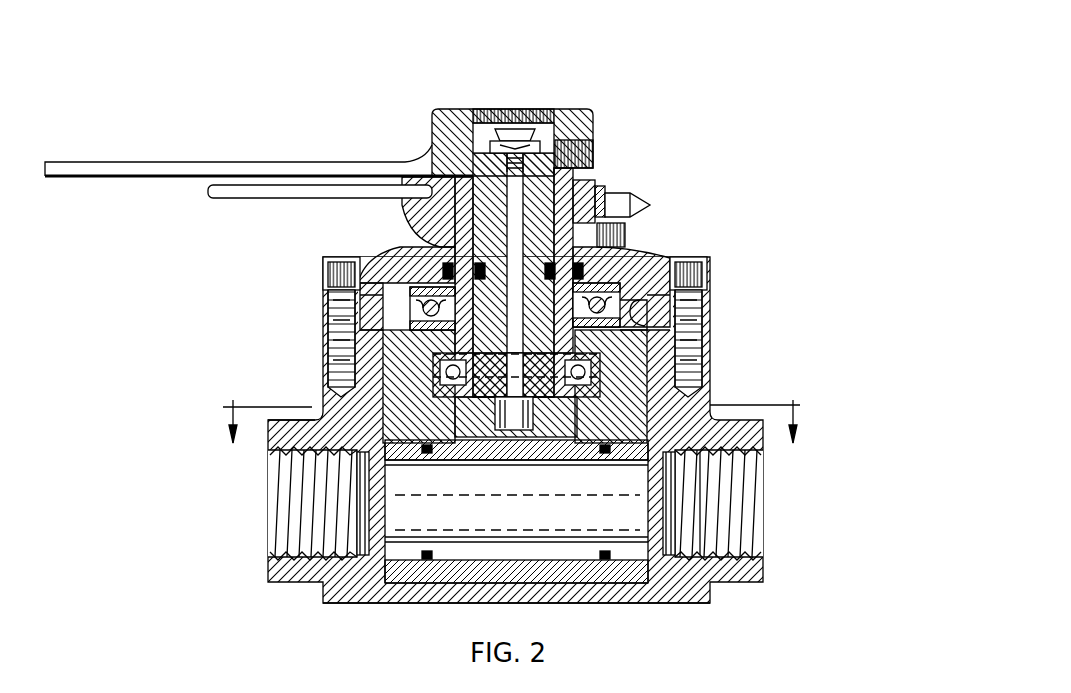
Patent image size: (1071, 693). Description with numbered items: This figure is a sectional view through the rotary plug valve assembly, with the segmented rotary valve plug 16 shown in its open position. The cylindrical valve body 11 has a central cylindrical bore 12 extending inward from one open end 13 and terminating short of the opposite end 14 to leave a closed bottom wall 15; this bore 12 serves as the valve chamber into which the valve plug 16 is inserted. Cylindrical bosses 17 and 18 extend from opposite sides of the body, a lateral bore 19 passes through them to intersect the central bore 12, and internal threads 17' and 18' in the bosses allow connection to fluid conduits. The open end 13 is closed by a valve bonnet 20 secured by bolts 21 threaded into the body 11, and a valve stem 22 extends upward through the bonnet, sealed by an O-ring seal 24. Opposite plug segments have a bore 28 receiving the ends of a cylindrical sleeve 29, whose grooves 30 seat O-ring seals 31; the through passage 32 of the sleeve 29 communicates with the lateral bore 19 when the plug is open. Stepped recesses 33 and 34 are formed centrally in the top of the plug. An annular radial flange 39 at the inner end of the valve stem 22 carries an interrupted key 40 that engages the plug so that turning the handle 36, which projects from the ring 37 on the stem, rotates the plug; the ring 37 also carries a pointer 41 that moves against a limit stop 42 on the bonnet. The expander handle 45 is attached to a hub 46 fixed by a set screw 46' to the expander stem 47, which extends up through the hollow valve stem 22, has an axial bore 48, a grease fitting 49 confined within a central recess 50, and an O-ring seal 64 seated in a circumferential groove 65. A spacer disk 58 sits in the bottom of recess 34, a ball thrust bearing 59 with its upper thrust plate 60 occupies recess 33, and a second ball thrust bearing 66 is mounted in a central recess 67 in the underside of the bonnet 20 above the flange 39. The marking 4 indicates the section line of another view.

The valve body 11 is at (711, 360).
The central cylindrical bore 12 is at (650, 322).
The open end 13 is at (705, 302).
The opposite end 14 is at (698, 600).
The closed bottom wall 15 is at (577, 603).
The rotary valve plug 16 is at (413, 437).
The cylindrical boss 17 is at (292, 539).
The internal threads 17' is at (293, 503).
The cylindrical boss 18 is at (739, 534).
The internal threads 18' is at (745, 503).
The lateral bore 19 is at (748, 490).
The valve bonnet 20 is at (645, 255).
The bolts 21 is at (325, 262).
The valve stem 22 is at (595, 180).
The O-ring seal 24 is at (447, 268).
The bore 28 is at (407, 445).
The cylindrical sleeve 29 is at (478, 555).
The grooves 30 is at (428, 453).
The O-ring seals 31 is at (428, 560).
The through passage 32 is at (470, 497).
The outer recess 33 is at (383, 405).
The inner recess 34 is at (400, 412).
The handle 36 is at (215, 192).
The ring 37 is at (605, 193).
The annular radial flange 39 is at (660, 342).
The interrupted key 40 is at (418, 377).
The pointer 41 is at (648, 207).
The limit stop 42 is at (625, 234).
The expander handle 45 is at (158, 162).
The hub 46 is at (541, 124).
The set screw 46' is at (612, 140).
The expander stem 47 is at (440, 128).
The axial bore 48 is at (517, 197).
The grease fitting 49 is at (513, 124).
The central recess 50 is at (493, 120).
The spacer disk 58 is at (525, 437).
The ball thrust bearing 59 is at (400, 345).
The upper thrust plate 60 is at (335, 312).
The O-ring seal 64 is at (660, 262).
The circumferential groove 65 is at (548, 268).
The second ball thrust bearing 66 is at (413, 310).
The central recess 67 is at (422, 292).
The section line 4- 4 is at (511, 436).